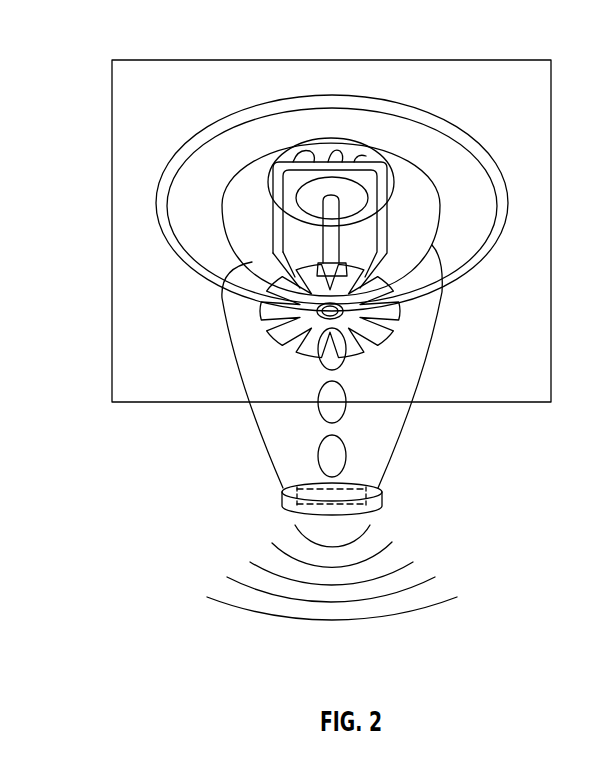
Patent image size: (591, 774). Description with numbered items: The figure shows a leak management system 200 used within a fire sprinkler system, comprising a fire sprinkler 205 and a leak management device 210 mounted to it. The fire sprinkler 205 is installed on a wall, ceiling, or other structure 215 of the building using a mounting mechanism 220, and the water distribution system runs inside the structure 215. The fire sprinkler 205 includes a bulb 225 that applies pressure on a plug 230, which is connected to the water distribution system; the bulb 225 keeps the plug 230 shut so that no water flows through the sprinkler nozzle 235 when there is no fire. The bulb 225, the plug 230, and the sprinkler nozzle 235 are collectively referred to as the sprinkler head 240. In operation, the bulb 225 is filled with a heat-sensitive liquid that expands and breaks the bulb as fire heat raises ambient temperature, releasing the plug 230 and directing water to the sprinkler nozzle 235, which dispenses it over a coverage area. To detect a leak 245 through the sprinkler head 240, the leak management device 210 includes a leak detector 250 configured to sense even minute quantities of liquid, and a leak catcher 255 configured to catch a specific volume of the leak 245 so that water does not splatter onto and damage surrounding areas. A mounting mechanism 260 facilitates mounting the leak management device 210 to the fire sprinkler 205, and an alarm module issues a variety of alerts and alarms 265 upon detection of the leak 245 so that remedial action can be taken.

The leak management system 200 is at (97, 99).
The fire sprinkler 205 is at (238, 248).
The leak management device 210 is at (266, 452).
The structure 215 is at (533, 114).
The mounting mechanism 220 is at (200, 140).
The bulb 225 is at (328, 216).
The plug 230 is at (355, 183).
The sprinkler nozzle 235 is at (273, 317).
The sprinkler head 240 is at (442, 138).
The leak 245 is at (340, 406).
The leak detector 250 is at (376, 508).
The leak catcher 255 is at (283, 497).
The mounting mechanism 260 is at (229, 352).
The alerts and alarms 265 is at (241, 608).